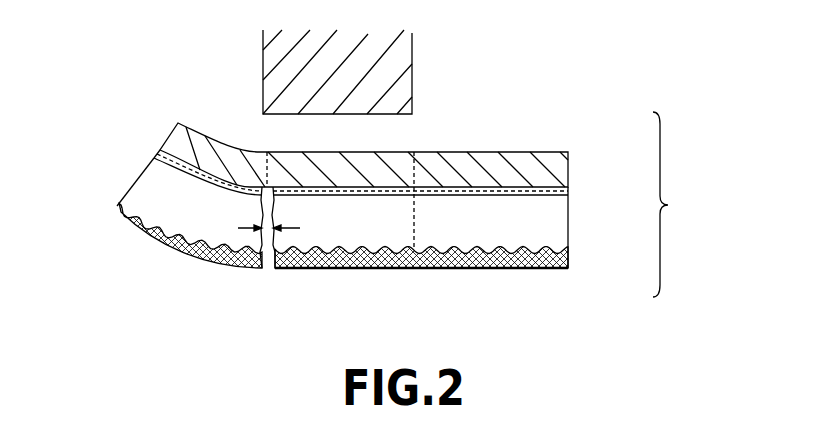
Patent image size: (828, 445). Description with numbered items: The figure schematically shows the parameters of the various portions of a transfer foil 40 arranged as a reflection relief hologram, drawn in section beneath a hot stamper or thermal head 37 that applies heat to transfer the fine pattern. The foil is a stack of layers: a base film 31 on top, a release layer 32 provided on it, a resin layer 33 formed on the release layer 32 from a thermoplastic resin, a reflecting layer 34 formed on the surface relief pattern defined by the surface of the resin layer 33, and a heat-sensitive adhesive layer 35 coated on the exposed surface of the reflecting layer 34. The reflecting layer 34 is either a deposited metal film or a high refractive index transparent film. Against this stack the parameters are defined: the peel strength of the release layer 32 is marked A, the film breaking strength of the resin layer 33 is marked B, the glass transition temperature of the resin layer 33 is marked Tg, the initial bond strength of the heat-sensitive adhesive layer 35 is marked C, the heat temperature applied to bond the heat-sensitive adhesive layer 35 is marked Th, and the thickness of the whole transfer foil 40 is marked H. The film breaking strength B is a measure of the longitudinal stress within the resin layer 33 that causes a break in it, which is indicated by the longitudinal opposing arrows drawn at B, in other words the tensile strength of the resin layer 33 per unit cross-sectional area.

The base film 31 is at (568, 166).
The release layer 32 is at (567, 190).
The resin layer 33 is at (562, 218).
The reflecting layer 34 is at (563, 244).
The heat-sensitive adhesive layer 35 is at (560, 270).
The hot stamper or thermal head 37 is at (403, 60).
The transfer foil 40 is at (685, 204).
The peel strength of the release layer A is at (289, 182).
The film breaking strength of the resin layer B is at (265, 256).
The initial bond strength of the heat-sensitive adhesive layer C is at (344, 274).
The thickness of the transfer foil H is at (148, 98).
The glass transition temperature of the resin layer Tg is at (178, 195).
The heat temperature applied to bond the heat-sensitive adhesive layer Th is at (390, 270).